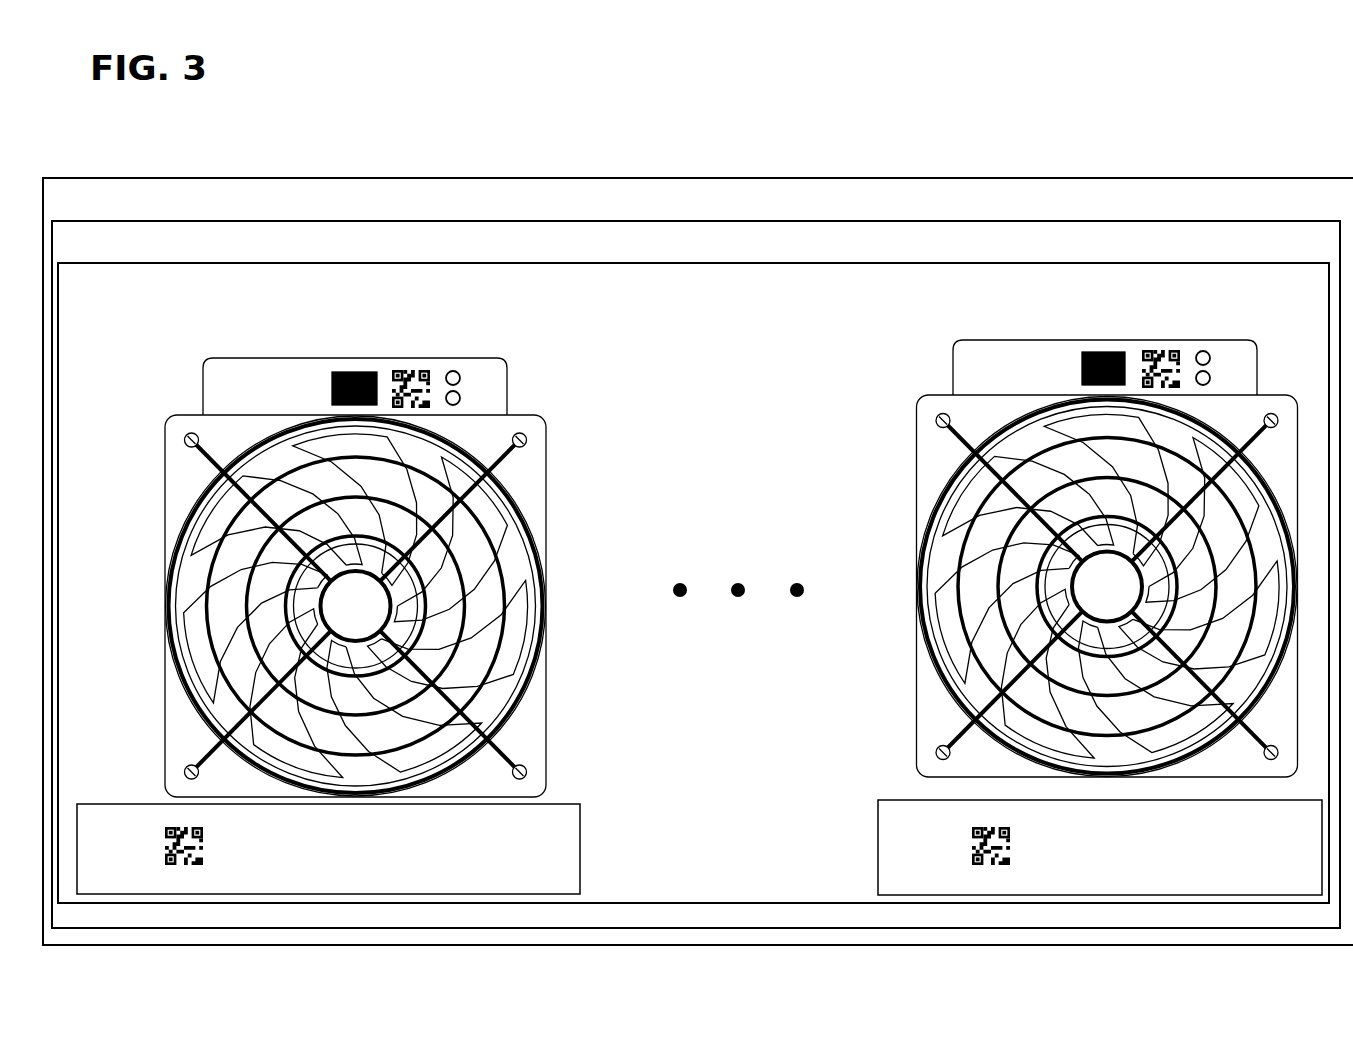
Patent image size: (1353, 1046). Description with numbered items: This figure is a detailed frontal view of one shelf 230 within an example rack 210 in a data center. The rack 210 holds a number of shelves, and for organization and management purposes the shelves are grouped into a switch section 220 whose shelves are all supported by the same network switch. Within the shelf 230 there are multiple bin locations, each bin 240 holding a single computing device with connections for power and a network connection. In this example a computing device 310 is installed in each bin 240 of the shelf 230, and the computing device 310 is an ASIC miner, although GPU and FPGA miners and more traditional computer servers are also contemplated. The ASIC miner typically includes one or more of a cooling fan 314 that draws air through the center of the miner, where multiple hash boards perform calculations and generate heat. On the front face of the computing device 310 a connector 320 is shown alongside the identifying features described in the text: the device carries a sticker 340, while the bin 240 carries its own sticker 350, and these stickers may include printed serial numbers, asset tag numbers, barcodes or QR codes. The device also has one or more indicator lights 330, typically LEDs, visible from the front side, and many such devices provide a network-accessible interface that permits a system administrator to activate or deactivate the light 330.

The rack 210 is at (759, 212).
The switch section 220 is at (770, 252).
The shelf 230 is at (757, 292).
The bin 240 is at (133, 877).
The computing device 310 is at (389, 558).
The cooling fan 314 is at (389, 600).
The network connector 320 is at (355, 372).
The indicator light 330 is at (458, 392).
The sticker 340 is at (408, 372).
The sticker 350 is at (205, 846).